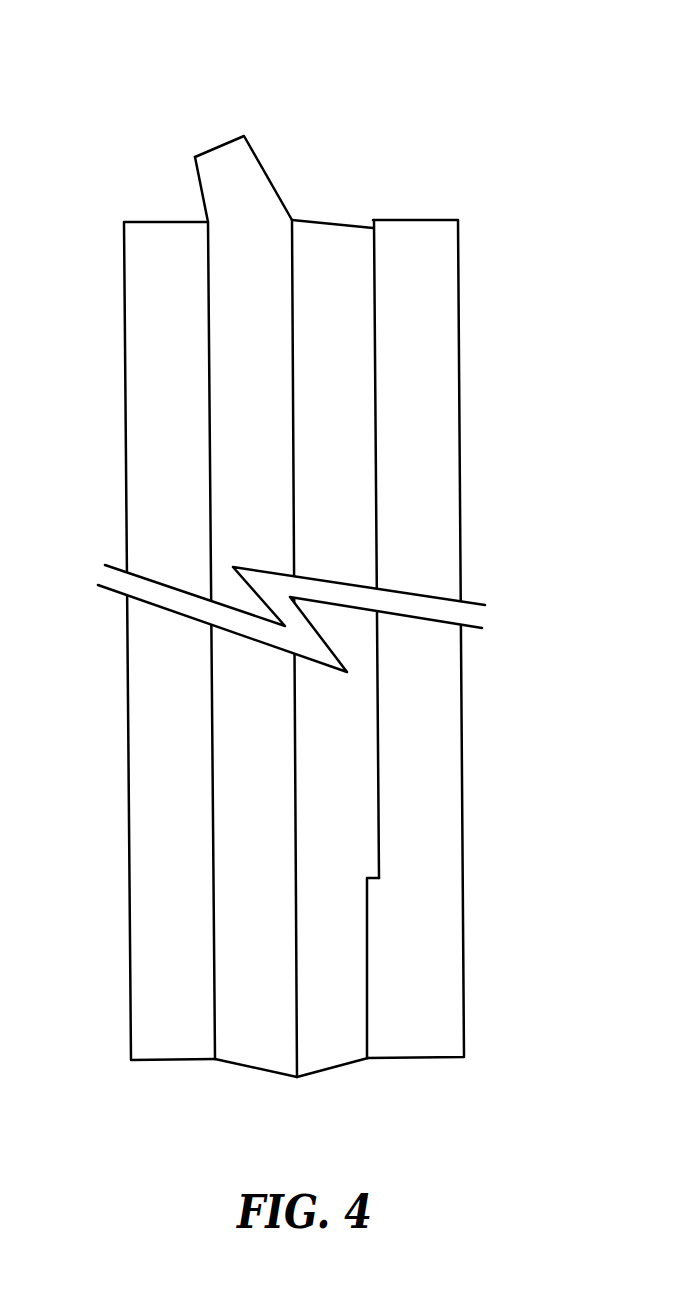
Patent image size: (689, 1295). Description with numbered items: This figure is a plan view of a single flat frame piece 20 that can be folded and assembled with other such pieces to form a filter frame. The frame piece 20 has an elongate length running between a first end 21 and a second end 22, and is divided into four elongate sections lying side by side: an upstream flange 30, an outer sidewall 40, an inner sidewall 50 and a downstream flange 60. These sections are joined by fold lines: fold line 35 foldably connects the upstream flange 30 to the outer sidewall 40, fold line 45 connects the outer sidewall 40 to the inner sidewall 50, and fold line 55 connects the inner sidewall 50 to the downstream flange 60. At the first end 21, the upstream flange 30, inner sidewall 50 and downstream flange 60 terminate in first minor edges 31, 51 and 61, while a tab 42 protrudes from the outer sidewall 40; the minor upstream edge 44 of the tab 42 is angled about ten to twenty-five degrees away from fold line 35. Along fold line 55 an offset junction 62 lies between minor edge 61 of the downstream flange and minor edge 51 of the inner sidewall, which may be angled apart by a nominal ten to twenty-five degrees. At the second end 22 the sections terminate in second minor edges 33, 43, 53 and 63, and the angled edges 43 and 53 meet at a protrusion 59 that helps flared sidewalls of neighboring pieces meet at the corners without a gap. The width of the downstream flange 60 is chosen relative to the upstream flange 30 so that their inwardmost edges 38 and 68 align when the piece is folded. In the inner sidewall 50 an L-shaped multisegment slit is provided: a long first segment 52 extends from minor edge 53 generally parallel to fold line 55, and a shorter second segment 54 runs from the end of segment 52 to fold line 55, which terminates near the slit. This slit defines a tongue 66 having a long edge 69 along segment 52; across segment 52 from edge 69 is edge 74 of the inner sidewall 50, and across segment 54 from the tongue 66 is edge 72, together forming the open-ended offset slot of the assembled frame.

The frame piece 20 is at (148, 65).
The first end 21 is at (419, 143).
The second end 22 is at (431, 1127).
The upstream flange 30 is at (158, 510).
The first minor edge 31 is at (148, 218).
The second minor edge 33 is at (168, 1060).
The fold line 35 is at (210, 442).
The inwardmost edge 38 is at (127, 343).
The outer sidewall 40 is at (243, 720).
The tab 42 is at (258, 158).
The second minor edge 43 is at (258, 1072).
The minor upstream edge 44 is at (198, 185).
The fold line 45 is at (296, 790).
The inner sidewall 50 is at (348, 710).
The first minor edge 51 is at (317, 220).
The first slit segment 52 is at (360, 967).
The second minor edge 53 is at (335, 1070).
The second slit segment 54 is at (372, 878).
The fold line 55 is at (382, 778).
The protrusion 59 is at (298, 1077).
The downstream flange 60 is at (438, 432).
The first minor edge 61 is at (418, 217).
The offset junction 62 is at (372, 220).
The second minor edge 63 is at (423, 1060).
The tongue 66 is at (375, 935).
The inwardmost edge 68 is at (458, 335).
The long edge 69 is at (364, 1023).
The edge 72 is at (374, 878).
The edge 74 is at (368, 1042).